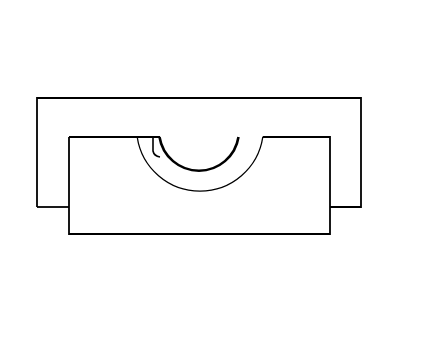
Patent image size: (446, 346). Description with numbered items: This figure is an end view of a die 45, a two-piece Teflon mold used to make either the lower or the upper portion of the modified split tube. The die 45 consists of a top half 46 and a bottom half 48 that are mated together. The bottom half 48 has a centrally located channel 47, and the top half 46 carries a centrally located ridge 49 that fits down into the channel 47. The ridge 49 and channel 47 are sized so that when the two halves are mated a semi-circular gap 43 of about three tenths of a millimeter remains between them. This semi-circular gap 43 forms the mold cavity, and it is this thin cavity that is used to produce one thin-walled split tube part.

The semi-circular gap 43 is at (178, 188).
The die 45 is at (244, 82).
The top half 46 is at (317, 107).
The channel 47 is at (150, 183).
The bottom half 48 is at (308, 232).
The ridge 49 is at (152, 137).